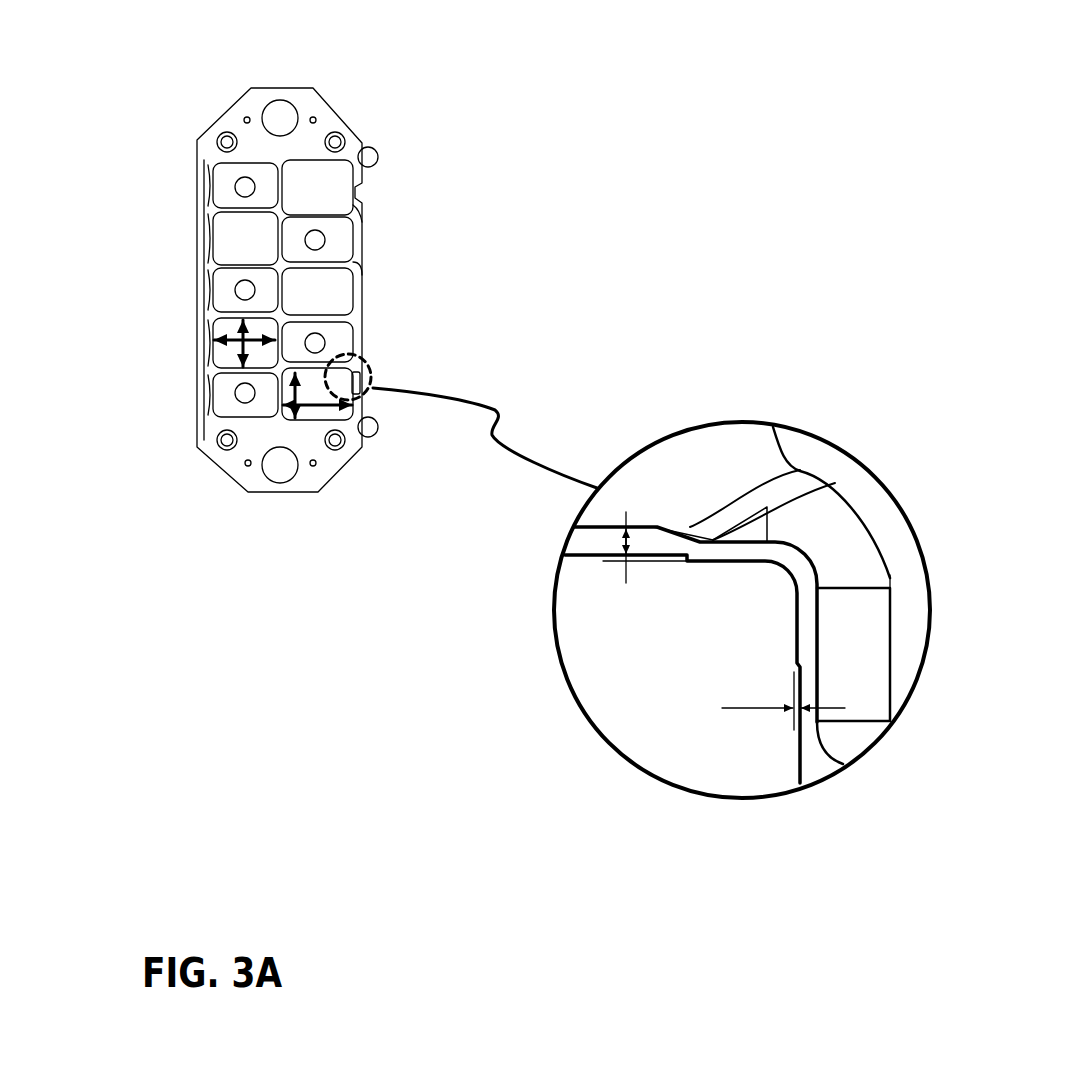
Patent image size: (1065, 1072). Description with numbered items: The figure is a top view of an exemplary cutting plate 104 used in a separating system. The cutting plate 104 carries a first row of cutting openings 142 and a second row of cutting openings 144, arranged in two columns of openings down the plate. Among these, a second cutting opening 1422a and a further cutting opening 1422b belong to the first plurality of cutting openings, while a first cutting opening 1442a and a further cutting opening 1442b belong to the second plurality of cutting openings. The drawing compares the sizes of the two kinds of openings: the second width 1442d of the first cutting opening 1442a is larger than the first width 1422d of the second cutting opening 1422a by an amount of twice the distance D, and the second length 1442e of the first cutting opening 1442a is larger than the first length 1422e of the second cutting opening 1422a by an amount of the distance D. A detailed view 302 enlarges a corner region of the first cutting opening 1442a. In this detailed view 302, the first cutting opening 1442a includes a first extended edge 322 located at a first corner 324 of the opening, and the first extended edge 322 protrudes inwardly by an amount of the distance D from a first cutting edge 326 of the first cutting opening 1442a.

The cutting plate 104 is at (323, 100).
The first row of cutting openings 142 is at (243, 133).
The second row of cutting openings 144 is at (316, 133).
The second cutting opening 1422a is at (222, 330).
The cutting opening of the first plurality of cutting openings 1422b is at (228, 253).
The first width 1422d is at (246, 368).
The first length 1422e is at (218, 344).
The first cutting opening 1442a is at (280, 414).
The cutting opening of the second plurality of cutting openings 1442b is at (330, 286).
The second width 1442d is at (300, 415).
The second length 1442e is at (330, 412).
The detailed view 302 is at (602, 737).
The first extended edge 322 is at (790, 612).
The first corner 324 is at (777, 578).
The first cutting edge 326 is at (803, 757).
The distance D is at (592, 564).